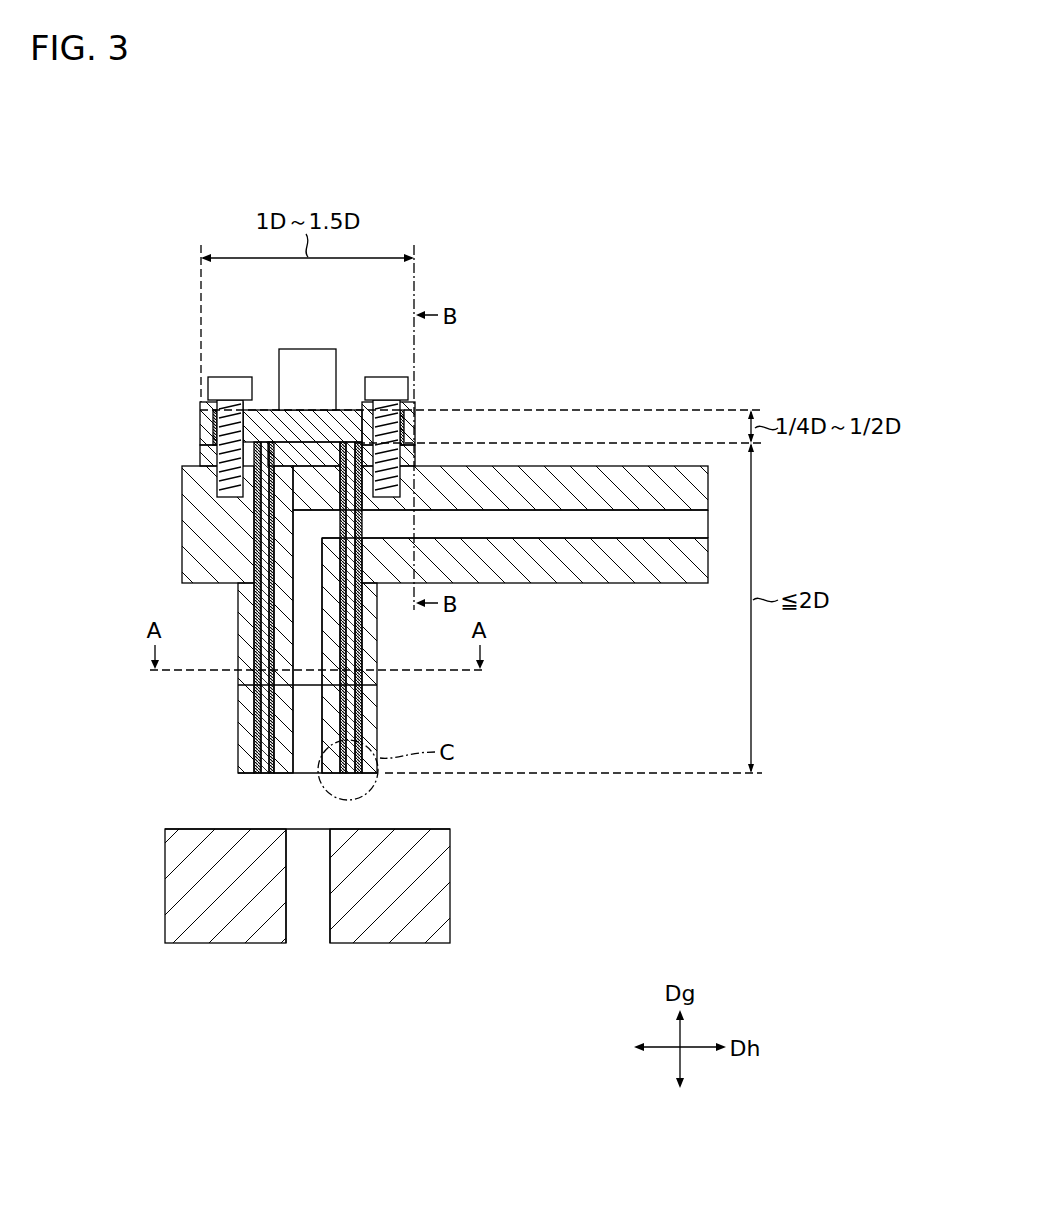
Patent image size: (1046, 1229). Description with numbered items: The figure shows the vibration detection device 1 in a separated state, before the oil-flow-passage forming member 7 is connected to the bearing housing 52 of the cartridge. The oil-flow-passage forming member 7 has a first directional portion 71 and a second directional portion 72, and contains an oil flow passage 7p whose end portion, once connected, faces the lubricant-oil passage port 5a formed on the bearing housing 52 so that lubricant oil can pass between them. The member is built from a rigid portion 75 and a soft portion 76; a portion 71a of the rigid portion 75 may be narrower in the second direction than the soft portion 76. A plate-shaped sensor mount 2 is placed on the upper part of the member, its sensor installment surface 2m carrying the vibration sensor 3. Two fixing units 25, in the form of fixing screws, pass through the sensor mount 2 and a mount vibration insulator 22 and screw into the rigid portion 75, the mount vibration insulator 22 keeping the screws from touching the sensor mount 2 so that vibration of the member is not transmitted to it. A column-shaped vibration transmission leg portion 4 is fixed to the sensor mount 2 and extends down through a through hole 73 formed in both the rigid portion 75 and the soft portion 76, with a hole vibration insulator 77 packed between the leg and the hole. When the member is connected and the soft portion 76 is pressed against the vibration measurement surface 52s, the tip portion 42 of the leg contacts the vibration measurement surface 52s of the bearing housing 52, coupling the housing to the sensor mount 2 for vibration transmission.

The vibration detection device 1 is at (128, 288).
The sensor mount 2 is at (210, 428).
The sensor installment surface 2m is at (266, 408).
The mount vibration insulator 22 is at (200, 458).
The vibration sensor 3 is at (322, 349).
The fixing unit 25 is at (402, 390).
The vibration transmission leg portion 4 is at (262, 535).
The oil-flow-passage forming member 7 is at (56, 540).
The oil flow passage 7p is at (672, 538).
The first directional portion 71 is at (103, 685).
The portion of the rigid portion 71a is at (392, 597).
The second directional portion 72 is at (185, 567).
The through hole 73 is at (358, 717).
The rigid portion 75 is at (245, 678).
The soft portion 76 is at (245, 738).
The hole vibration insulator 77 is at (358, 697).
The tip portion 42 is at (376, 782).
The lubricant-oil passage port 5a is at (305, 828).
The bearing housing 52 is at (166, 888).
The vibration measurement surface 52s is at (370, 829).